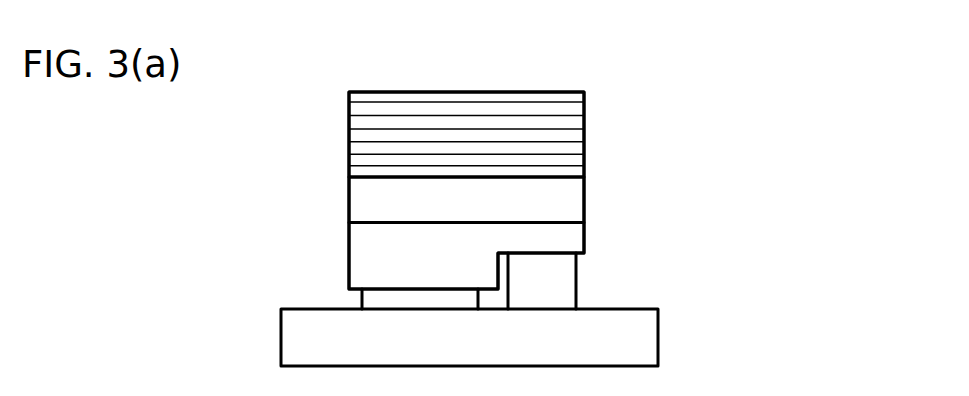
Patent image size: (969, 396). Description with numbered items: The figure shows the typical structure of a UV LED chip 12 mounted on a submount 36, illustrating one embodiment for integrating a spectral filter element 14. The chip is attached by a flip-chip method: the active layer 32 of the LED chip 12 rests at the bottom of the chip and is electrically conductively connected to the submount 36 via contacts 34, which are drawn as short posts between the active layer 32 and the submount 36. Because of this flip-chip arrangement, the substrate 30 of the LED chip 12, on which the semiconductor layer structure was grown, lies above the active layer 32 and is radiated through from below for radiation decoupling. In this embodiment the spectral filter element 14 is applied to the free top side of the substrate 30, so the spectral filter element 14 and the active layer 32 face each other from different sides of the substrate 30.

The UV LED chip 12 is at (717, 155).
The spectral filter element 14 is at (557, 136).
The substrate 30 is at (567, 200).
The active layer 32 is at (533, 243).
The contacts 34 is at (372, 302).
The submount 36 is at (623, 342).